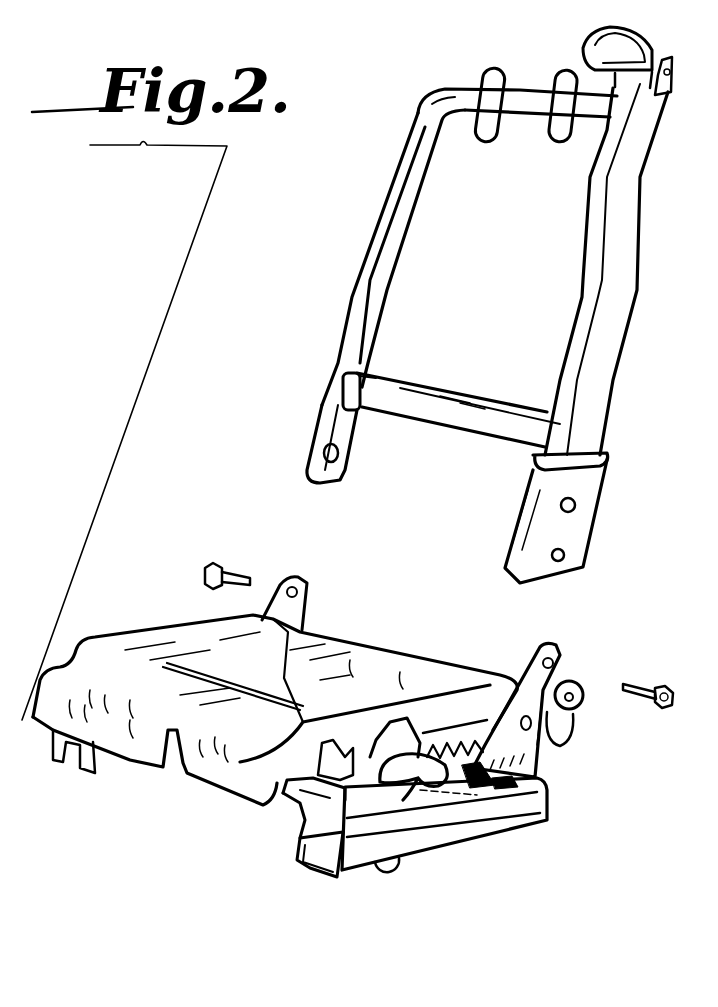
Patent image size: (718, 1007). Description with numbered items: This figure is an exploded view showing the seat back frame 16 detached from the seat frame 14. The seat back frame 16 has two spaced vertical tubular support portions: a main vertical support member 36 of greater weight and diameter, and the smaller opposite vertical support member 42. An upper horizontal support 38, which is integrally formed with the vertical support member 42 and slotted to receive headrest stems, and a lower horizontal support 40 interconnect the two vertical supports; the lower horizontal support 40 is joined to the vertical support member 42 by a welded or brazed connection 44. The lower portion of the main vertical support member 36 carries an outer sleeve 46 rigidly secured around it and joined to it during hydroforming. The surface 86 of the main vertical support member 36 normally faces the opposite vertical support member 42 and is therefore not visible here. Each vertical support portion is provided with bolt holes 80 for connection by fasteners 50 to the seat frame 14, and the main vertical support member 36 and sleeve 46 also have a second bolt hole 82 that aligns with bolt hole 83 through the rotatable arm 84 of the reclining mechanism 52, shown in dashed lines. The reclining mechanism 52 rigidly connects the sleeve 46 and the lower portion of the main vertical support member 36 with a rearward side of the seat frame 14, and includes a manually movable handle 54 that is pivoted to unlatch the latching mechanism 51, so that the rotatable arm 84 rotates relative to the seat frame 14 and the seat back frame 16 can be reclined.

The seat frame 14 is at (230, 802).
The seat back frame 16 is at (641, 283).
The main vertical support member 36 is at (608, 355).
The upper horizontal support 38 is at (527, 100).
The lower horizontal support 40 is at (437, 372).
The vertical support member 42 is at (368, 243).
The welded or braised connection 44 is at (345, 393).
The outer sleeve 46 is at (590, 485).
The fasteners 50 is at (205, 574).
The latching mechanism 51 is at (470, 780).
The reclining mechanism 52 is at (543, 782).
The manually movable handle 54 is at (303, 827).
The bolt holes 80 is at (325, 437).
The second bolt hole 82 is at (565, 555).
The bolt hole 83 is at (537, 740).
The rotatable arm 84 is at (540, 747).
The surface 86 is at (562, 385).